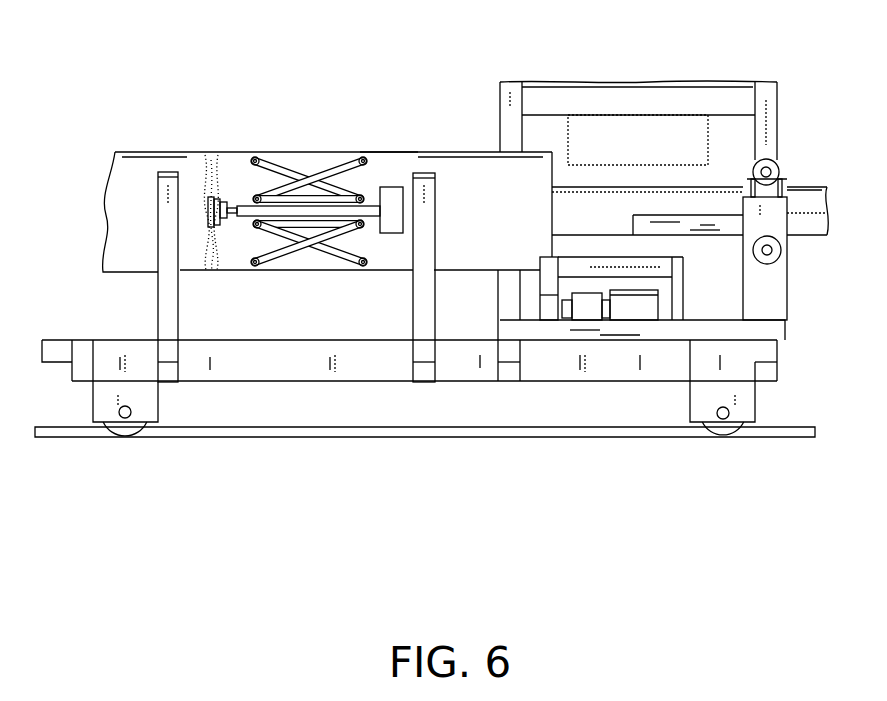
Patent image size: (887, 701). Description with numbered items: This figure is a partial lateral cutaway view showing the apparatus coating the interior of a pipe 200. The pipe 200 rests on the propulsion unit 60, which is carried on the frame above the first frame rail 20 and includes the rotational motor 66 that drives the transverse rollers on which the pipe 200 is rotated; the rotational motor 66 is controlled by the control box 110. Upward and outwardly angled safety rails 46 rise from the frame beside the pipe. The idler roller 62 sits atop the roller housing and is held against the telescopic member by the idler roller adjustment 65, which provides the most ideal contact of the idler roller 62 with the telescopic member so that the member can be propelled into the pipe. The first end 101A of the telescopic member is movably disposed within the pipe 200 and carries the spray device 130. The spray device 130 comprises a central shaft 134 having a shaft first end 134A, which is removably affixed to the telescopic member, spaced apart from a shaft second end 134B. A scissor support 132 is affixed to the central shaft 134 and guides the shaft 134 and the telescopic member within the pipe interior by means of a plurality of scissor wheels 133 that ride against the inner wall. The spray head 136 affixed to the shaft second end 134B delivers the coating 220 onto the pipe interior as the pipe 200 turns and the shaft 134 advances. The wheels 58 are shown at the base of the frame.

The first frame rail 20 is at (618, 438).
The safety rails 46 is at (158, 293).
The wheels 58 is at (127, 434).
The propulsion unit 60 is at (697, 273).
The idler roller 62 is at (778, 160).
The idler roller adjustment 65 is at (790, 180).
The rotational motor 66 is at (635, 305).
The first end 101A is at (388, 155).
The control box 110 is at (605, 100).
The spray device 130 is at (275, 147).
The scissor support 132 is at (310, 153).
The scissor wheels 133 is at (256, 160).
The central shaft 134 is at (345, 216).
The shaft first end 134A is at (403, 211).
The shaft second end 134B is at (213, 172).
The spray head 136 is at (208, 218).
The pipe 200 is at (115, 152).
The coating 220 is at (210, 157).